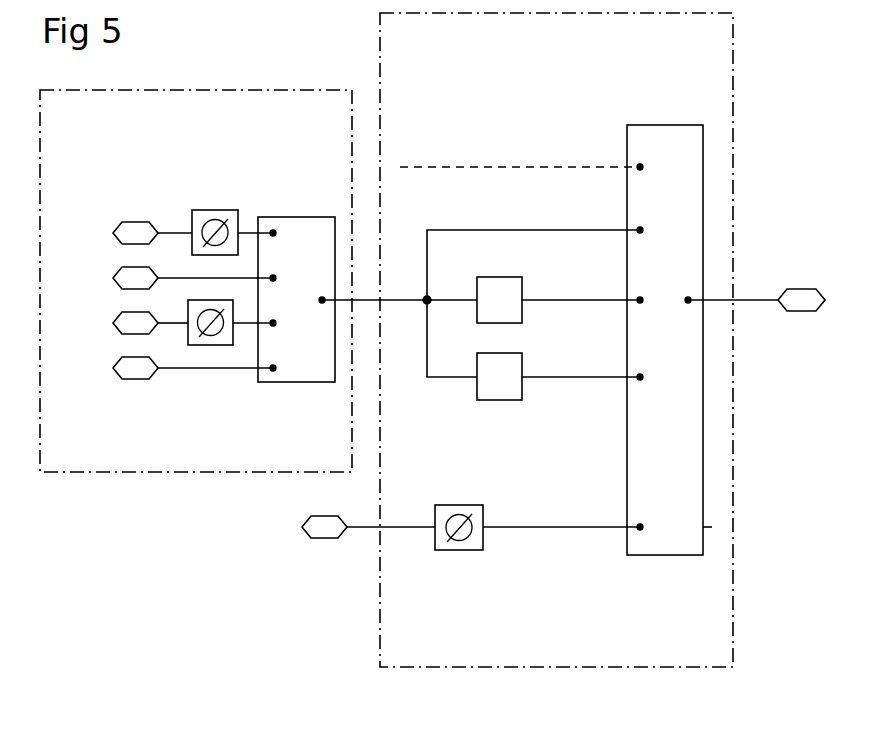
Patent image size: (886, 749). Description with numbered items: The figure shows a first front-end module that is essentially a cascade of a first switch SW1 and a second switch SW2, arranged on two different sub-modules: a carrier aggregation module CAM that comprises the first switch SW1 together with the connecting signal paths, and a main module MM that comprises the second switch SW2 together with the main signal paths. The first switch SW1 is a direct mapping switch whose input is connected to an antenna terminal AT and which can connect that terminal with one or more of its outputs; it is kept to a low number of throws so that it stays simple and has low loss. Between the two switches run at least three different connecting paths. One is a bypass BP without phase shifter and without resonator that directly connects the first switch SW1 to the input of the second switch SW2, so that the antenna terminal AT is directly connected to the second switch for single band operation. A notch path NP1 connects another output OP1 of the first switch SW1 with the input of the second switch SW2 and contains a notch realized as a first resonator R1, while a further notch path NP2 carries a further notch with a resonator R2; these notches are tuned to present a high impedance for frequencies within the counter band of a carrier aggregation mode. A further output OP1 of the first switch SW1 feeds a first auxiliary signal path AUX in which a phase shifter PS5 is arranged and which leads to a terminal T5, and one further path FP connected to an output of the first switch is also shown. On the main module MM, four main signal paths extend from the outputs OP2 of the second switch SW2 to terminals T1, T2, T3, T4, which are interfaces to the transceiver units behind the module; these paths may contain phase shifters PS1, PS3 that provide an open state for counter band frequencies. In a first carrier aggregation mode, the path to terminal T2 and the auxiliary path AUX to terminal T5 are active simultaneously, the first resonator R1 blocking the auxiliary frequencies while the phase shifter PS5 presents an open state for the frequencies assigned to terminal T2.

The main module MM is at (99, 473).
The carrier aggregation module CAM is at (512, 668).
The terminal T1 is at (130, 234).
The terminal T2 is at (171, 279).
The terminal T3 is at (128, 324).
The terminal T4 is at (171, 369).
The terminal T5 is at (347, 528).
The phase shifter PS1 is at (213, 210).
The phase shifter PS3 is at (200, 345).
The phase shifter PS5 is at (448, 550).
The first switch SW1 is at (663, 145).
The second switch SW2 is at (285, 217).
The output OP1 is at (619, 533).
The output OP2 is at (249, 376).
The further path FP is at (580, 167).
The bypass BP is at (580, 230).
The notch path NP1 is at (555, 300).
The further notch path NP2 is at (545, 377).
The first resonator R1 is at (499, 300).
The resonator R2 is at (499, 376).
The first auxiliary signal path AUX is at (550, 527).
The antenna terminal AT is at (806, 300).